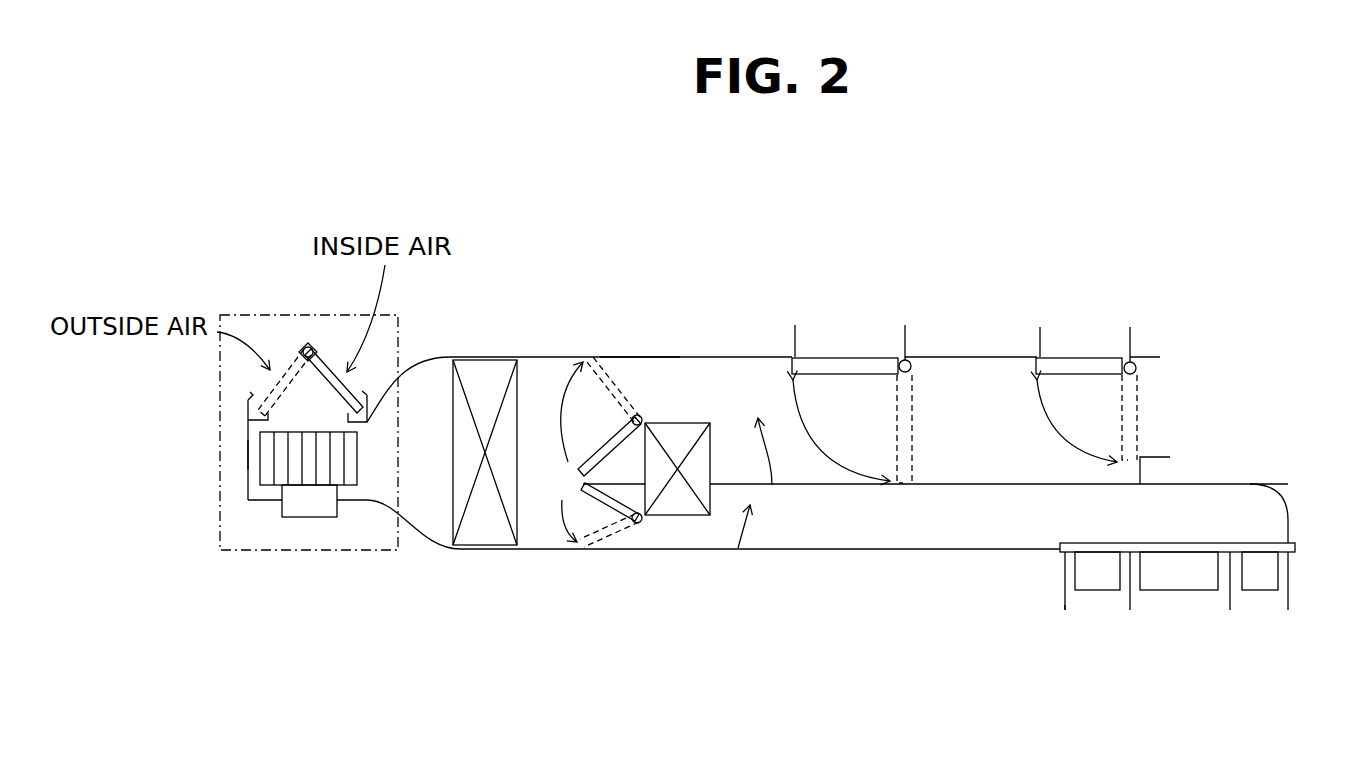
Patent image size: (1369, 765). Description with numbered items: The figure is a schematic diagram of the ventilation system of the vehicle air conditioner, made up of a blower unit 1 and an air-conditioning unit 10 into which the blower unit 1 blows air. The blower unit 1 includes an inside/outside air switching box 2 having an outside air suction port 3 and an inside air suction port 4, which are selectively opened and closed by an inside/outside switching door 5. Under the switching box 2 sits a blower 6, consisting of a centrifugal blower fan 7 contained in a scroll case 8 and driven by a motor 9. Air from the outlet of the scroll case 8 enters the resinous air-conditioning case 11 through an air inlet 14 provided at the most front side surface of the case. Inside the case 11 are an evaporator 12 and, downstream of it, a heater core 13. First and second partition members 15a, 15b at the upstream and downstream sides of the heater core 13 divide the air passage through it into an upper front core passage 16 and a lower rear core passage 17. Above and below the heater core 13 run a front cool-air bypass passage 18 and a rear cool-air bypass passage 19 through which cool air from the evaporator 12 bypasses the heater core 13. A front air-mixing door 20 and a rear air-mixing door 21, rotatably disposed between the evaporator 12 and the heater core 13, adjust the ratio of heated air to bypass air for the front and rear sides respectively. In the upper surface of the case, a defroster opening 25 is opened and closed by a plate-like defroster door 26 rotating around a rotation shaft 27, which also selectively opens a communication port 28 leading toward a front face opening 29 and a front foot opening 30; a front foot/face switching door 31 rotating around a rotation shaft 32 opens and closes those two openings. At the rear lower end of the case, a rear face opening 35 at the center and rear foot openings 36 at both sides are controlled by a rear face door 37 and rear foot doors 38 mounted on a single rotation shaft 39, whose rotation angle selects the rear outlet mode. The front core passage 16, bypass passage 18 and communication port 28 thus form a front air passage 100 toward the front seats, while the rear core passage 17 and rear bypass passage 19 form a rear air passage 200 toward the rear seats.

The blower unit 1 is at (253, 556).
The inside/outside air switching box 2 is at (245, 411).
The outside air suction port 3 is at (283, 357).
The inside air suction port 4 is at (333, 357).
The inside/outside switching door 5 is at (350, 383).
The blower 6 is at (346, 507).
The centrifugal blower fan 7 is at (285, 468).
The scroll case 8 is at (248, 453).
The motor 9 is at (307, 503).
The air-conditioning unit 10 is at (697, 343).
The air-conditioning case 11 is at (637, 357).
The evaporator 12 is at (490, 377).
The heater core 13 is at (693, 520).
The air inlet 14 is at (410, 457).
The first partition member 15a is at (595, 458).
The second partition member 15b is at (817, 485).
The front core passage 16 is at (640, 453).
The rear core passage 17 is at (680, 520).
The front cool-air bypass passage 18 is at (677, 393).
The rear cool-air bypass passage 19 is at (654, 537).
The front air-mixing door 20 is at (613, 440).
The rear air-mixing door 21 is at (597, 535).
The defroster opening 25 is at (857, 338).
The defroster door 26 is at (885, 357).
The rotation shaft 27 is at (920, 357).
The communication port 28 is at (980, 423).
The front face opening 29 is at (1103, 337).
The front foot opening 30 is at (1158, 432).
The front foot/face switching door 31 is at (1095, 360).
The rotation shaft 32 is at (1137, 368).
The rear face opening 35 is at (1143, 607).
The rear foot opening 36 is at (1083, 608).
The rear face door 37 is at (1200, 563).
The rear foot door 38 is at (1092, 573).
The single rotation shaft 39 is at (1230, 542).
The front air passage 100 is at (772, 485).
The rear air passage 200 is at (738, 548).